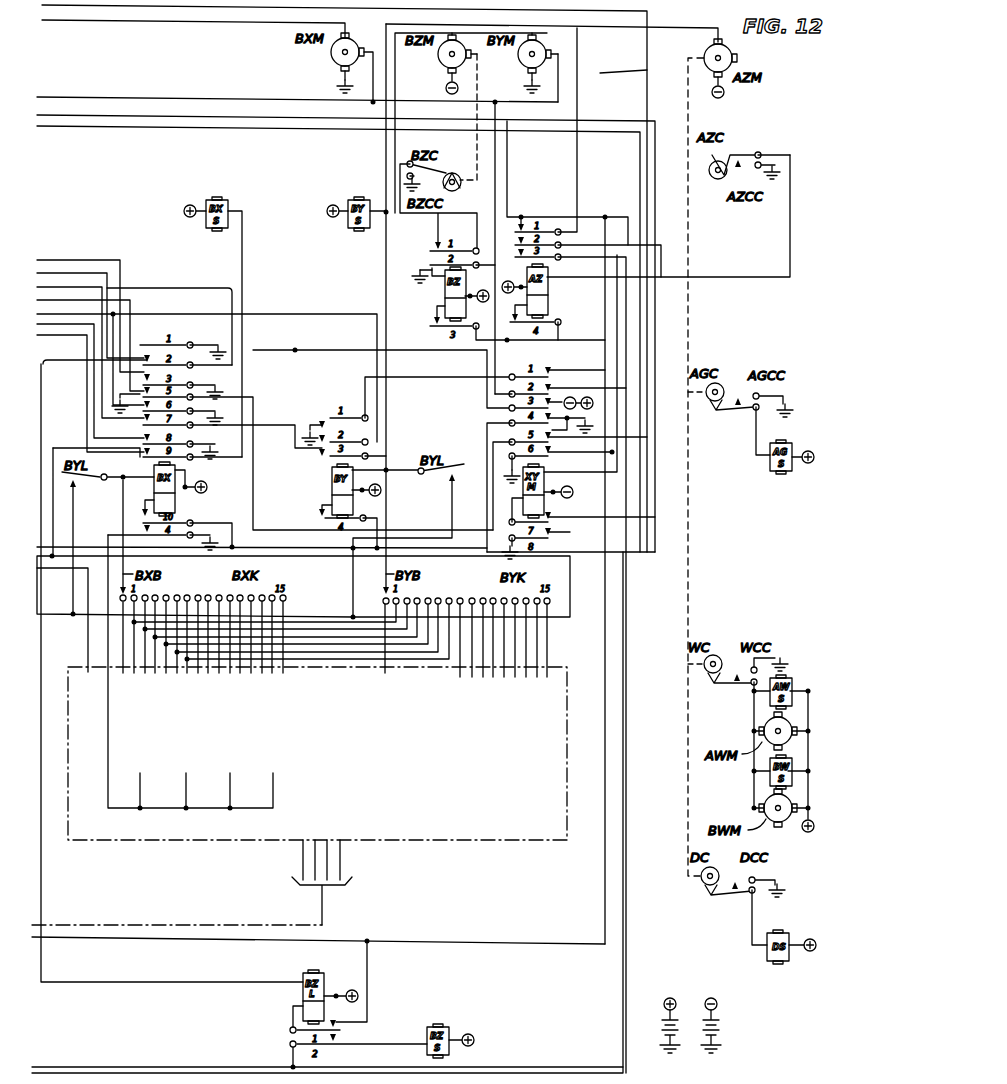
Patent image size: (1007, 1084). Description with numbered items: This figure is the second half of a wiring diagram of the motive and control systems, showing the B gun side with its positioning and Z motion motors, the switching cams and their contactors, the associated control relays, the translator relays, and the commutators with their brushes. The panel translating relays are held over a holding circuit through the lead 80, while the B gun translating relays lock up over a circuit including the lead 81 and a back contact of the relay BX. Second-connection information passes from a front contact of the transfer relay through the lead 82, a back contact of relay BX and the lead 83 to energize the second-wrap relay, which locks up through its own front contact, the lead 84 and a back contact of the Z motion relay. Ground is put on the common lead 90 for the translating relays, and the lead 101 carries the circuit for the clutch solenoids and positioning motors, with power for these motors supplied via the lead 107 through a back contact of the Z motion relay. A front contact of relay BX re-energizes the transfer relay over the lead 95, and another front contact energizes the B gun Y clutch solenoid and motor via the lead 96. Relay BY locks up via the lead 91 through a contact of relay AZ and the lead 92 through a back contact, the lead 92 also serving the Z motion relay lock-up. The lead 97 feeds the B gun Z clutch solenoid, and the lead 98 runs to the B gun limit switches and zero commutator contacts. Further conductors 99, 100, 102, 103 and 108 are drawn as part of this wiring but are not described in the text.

The lead 80 is at (205, 313).
The lead 81 is at (108, 728).
The lead 82 is at (212, 288).
The lead 83 is at (43, 430).
The lead 84 is at (515, 940).
The common lead 90 is at (88, 640).
The lead 91 is at (306, 548).
The lead 92 is at (193, 115).
The lead 95 is at (83, 260).
The lead 96 is at (528, 26).
The lead 97 is at (626, 720).
The lead 98 is at (55, 614).
The conductor 99 is at (79, 334).
The conductor 100 is at (107, 6).
The lead 101 is at (160, 20).
The conductor 102 is at (87, 382).
The conductor 103 is at (218, 127).
The lead 107 is at (93, 97).
The conductor 108 is at (115, 260).